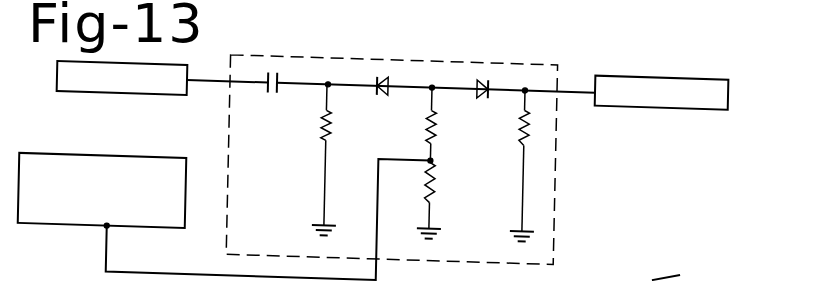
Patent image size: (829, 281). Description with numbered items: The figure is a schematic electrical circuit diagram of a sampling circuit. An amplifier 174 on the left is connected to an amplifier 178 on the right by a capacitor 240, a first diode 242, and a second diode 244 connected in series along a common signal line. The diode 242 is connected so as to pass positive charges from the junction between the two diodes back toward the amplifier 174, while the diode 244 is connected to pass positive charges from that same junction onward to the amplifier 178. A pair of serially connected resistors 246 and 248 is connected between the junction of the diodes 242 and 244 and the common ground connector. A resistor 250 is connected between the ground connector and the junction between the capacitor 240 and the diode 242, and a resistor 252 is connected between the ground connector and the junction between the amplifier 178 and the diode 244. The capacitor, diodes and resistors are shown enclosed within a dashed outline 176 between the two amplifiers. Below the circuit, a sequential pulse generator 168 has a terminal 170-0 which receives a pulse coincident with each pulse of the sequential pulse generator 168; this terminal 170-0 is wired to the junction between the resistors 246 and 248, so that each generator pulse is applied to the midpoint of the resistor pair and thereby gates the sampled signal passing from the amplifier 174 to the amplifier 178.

The sequential pulse generator 168 is at (117, 164).
The terminal 170 is at (109, 232).
The amplifier 174 is at (167, 89).
The gating circuit 176 is at (516, 53).
The amplifier 178 is at (684, 90).
The capacitor 240 is at (275, 61).
The first diode 242 is at (383, 64).
The second diode 244 is at (477, 74).
The resistor 246 is at (429, 122).
The resistor 248 is at (438, 182).
The resistor 250 is at (326, 114).
The resistor 252 is at (523, 116).